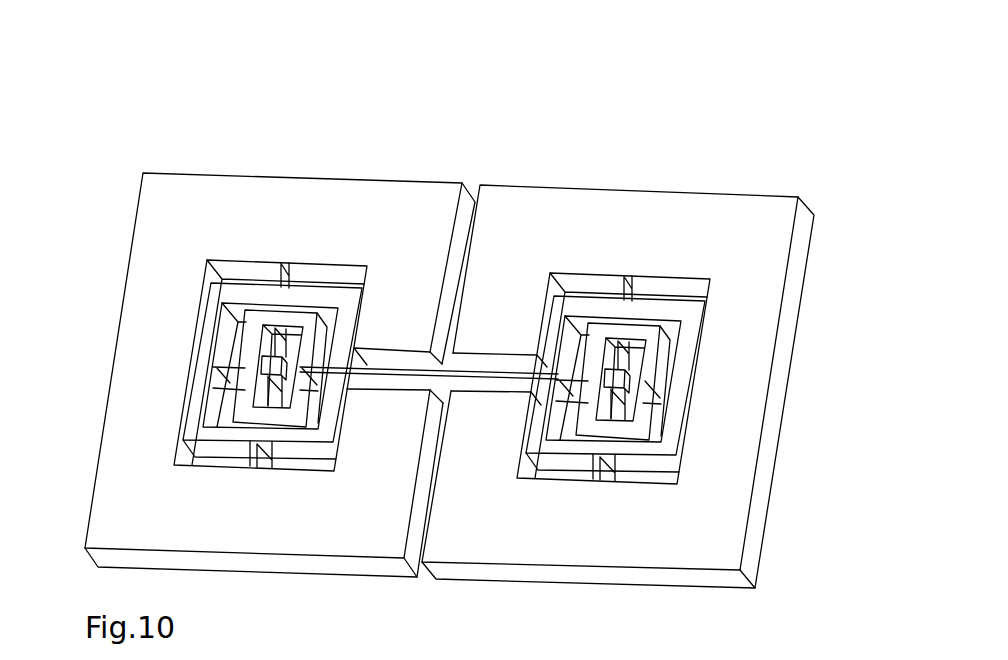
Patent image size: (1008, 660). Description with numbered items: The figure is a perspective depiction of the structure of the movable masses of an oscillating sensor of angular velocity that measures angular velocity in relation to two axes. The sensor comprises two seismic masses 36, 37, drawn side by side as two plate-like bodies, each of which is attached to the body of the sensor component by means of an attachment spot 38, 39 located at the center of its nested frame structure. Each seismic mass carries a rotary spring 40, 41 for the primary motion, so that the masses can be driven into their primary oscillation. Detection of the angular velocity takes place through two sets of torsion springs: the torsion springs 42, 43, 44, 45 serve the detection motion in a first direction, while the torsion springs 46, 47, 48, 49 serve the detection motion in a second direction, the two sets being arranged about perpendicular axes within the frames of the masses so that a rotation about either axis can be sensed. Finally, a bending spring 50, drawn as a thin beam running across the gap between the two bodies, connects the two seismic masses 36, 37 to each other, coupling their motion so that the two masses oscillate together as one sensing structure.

The seismic mass 36 is at (150, 174).
The seismic mass 37 is at (757, 196).
The attachment spot 38 is at (294, 326).
The attachment spot 39 is at (637, 332).
The rotary spring 40 is at (257, 390).
The rotary spring 41 is at (615, 405).
The torsion spring 42 is at (229, 285).
The torsion spring 43 is at (670, 388).
The torsion spring 44 is at (358, 285).
The torsion spring 45 is at (575, 296).
The torsion spring 46 is at (293, 272).
The torsion spring 47 is at (640, 318).
The torsion spring 48 is at (266, 470).
The torsion spring 49 is at (606, 470).
The bending spring 50 is at (413, 371).